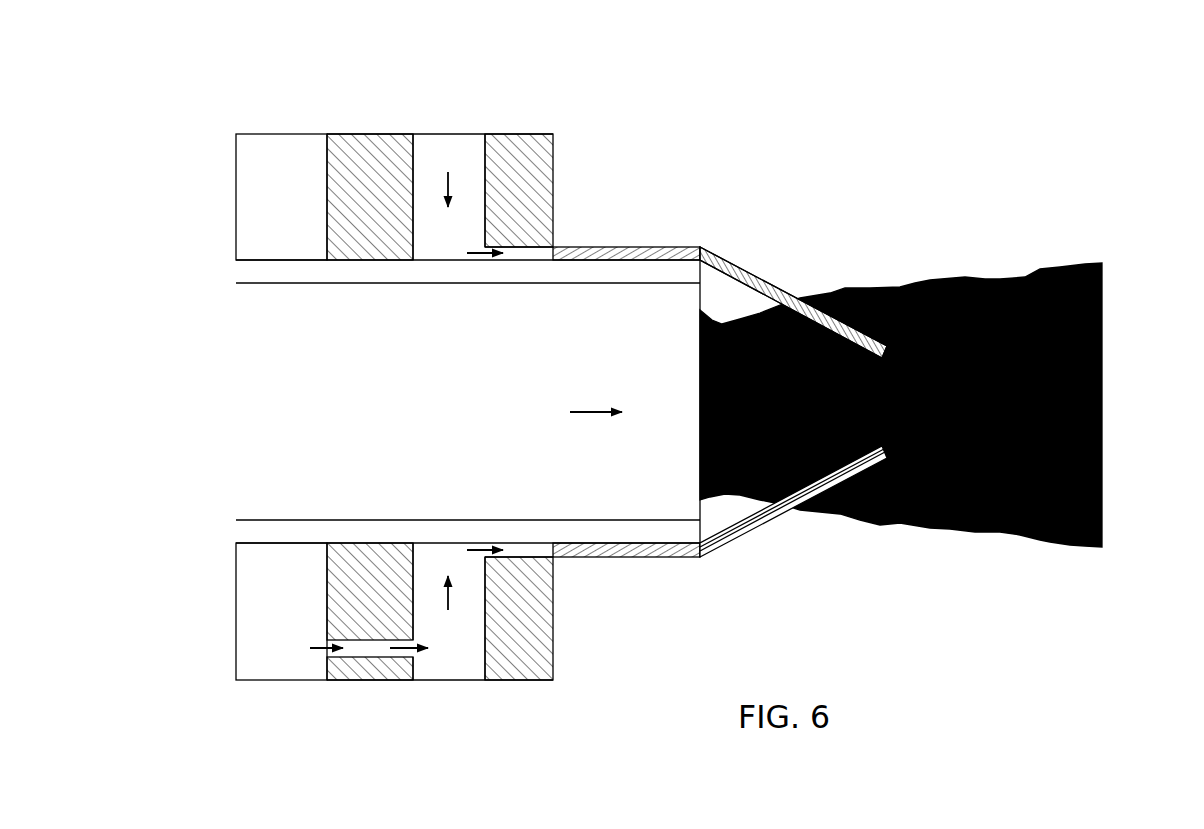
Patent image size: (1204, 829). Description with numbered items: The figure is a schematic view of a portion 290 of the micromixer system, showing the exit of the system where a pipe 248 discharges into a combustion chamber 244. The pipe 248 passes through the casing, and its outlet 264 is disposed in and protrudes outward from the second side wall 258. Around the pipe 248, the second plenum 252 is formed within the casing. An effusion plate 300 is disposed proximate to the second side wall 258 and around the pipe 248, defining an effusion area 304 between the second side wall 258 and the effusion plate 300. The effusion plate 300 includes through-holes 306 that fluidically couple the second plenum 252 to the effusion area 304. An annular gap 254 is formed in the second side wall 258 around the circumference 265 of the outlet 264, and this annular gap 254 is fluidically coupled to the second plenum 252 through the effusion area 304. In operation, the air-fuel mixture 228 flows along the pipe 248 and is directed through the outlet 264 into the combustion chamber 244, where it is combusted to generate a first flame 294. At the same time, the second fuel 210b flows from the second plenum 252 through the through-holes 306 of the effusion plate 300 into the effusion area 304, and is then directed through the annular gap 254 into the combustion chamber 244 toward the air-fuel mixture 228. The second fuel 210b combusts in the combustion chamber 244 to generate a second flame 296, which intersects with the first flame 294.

The portion 290 is at (972, 86).
The second plenum 252 is at (243, 197).
The pipe 248 is at (243, 373).
The second side wall 258 is at (552, 160).
The effusion plate 300 is at (327, 582).
The through-holes 306 is at (373, 650).
The effusion area 304 is at (450, 672).
The second fuel 210b is at (453, 170).
The circumference 265 is at (608, 268).
The annular gap 254 is at (524, 548).
The outlet 264 is at (697, 468).
The air-fuel mixture 228 is at (590, 415).
The first flame 294 is at (1103, 307).
The second flame 296 is at (775, 288).
The combustion chamber 244 is at (1132, 508).